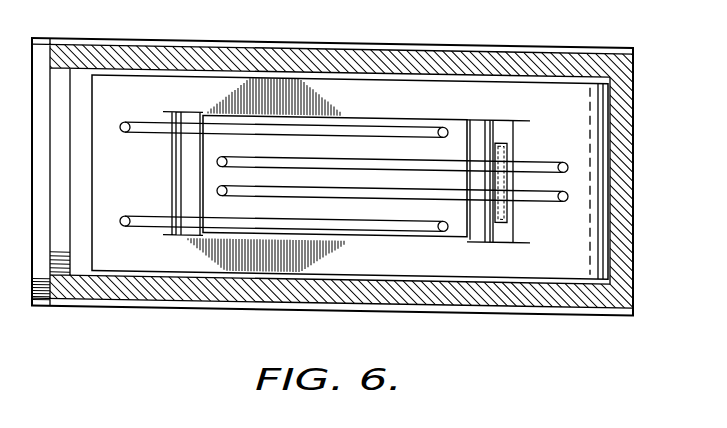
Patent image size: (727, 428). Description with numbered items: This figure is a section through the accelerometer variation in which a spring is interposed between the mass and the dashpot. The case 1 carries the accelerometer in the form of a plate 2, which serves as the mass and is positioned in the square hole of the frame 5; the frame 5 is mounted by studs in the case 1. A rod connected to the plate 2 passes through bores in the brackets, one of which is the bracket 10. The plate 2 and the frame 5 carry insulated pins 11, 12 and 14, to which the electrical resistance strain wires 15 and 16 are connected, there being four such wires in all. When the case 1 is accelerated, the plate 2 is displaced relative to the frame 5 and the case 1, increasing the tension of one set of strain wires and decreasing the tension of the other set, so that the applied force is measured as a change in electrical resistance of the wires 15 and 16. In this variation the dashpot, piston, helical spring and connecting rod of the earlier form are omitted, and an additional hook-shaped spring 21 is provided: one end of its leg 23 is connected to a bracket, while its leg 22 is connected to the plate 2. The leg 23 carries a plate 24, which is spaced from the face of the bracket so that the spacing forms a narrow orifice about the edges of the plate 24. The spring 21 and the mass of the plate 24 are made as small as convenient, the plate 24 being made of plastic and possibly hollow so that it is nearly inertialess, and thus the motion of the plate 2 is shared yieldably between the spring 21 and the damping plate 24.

The case 1 is at (192, 307).
The plate 2 is at (313, 135).
The frame 5 is at (163, 86).
The bracket 10 is at (600, 224).
The insulated pin 11 is at (125, 120).
The insulated pin 12 is at (568, 158).
The insulated pin 14 is at (442, 122).
The electrical resistance strain wire 15 is at (150, 131).
The electrical resistance strain wire 16 is at (343, 191).
The hook-shaped spring 21 is at (488, 236).
The leg 22 is at (473, 125).
The leg 23 is at (513, 227).
The plate 24 is at (504, 141).